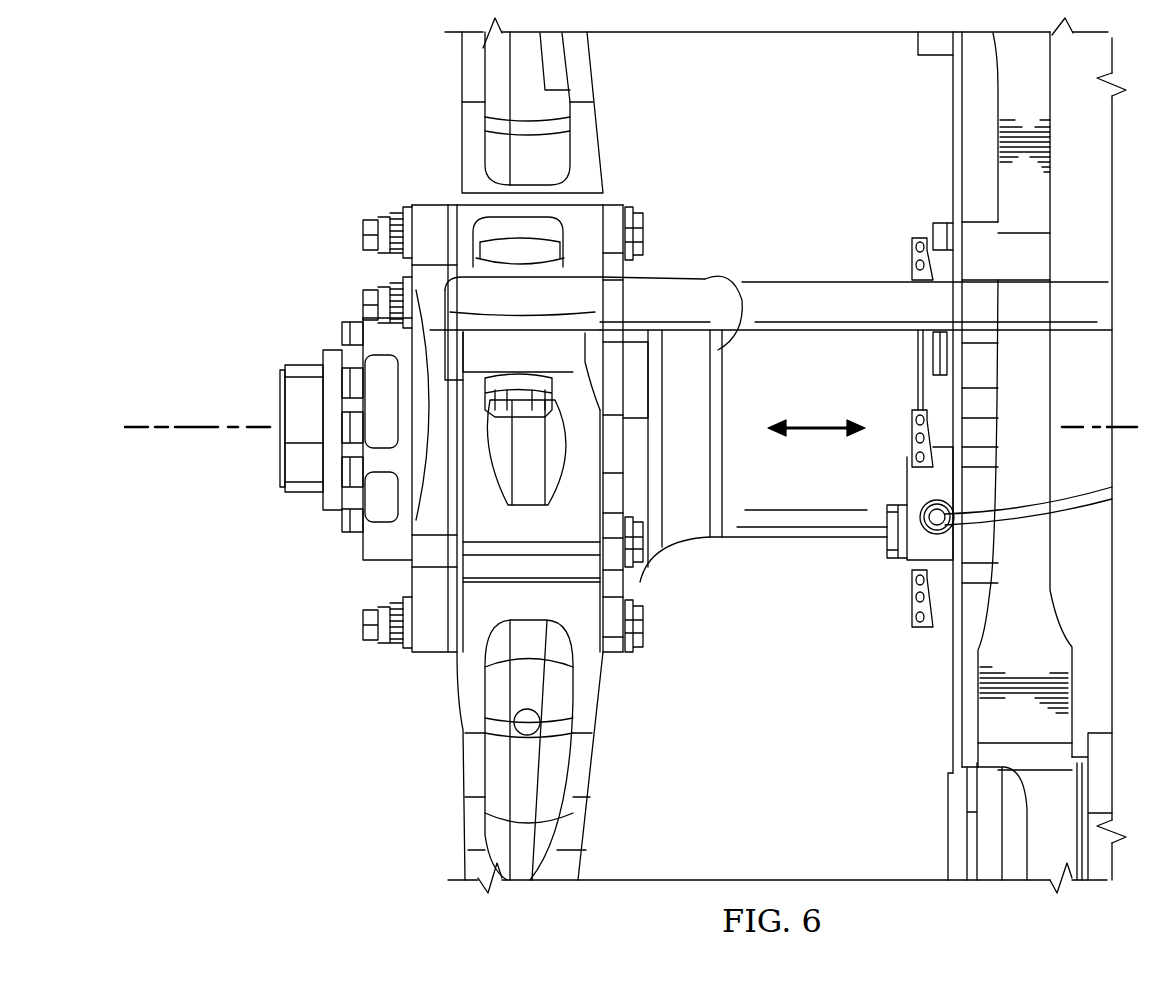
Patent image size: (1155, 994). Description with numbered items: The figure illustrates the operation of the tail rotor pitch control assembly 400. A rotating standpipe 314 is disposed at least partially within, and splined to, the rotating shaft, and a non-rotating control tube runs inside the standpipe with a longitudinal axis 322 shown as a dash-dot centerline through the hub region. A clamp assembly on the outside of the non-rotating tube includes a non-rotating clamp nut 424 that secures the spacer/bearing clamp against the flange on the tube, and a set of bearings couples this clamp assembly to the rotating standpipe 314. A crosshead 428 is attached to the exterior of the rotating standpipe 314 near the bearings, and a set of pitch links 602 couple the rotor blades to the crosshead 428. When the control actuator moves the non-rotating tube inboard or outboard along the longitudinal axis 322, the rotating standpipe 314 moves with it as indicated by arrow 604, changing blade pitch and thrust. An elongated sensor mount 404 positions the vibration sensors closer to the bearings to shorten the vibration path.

The tail rotor pitch control assembly 400 is at (287, 150).
The crosshead 428 is at (472, 80).
The non-rotating clamp nut 424 is at (420, 264).
The elongated sensor mount 404 is at (282, 397).
The longitudinal axis 322 is at (136, 427).
The rotating standpipe 314 is at (740, 318).
The set of pitch links 602 is at (832, 292).
The arrow 604 is at (817, 428).